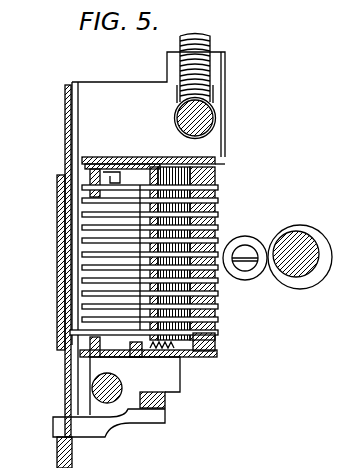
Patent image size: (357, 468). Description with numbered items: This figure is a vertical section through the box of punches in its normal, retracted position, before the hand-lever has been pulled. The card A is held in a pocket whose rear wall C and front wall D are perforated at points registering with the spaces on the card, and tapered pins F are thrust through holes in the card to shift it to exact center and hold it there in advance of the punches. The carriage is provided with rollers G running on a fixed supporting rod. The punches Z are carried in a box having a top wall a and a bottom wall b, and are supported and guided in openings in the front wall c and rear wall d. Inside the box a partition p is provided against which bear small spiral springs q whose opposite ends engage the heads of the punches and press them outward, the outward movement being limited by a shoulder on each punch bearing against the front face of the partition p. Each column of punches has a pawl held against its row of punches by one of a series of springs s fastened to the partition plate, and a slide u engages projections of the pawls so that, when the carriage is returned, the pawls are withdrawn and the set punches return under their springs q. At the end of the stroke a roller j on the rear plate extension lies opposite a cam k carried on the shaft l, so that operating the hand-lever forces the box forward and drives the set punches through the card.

The card A is at (65, 98).
The rear wall of the pocket C is at (72, 120).
The front wall of the pocket D is at (58, 175).
The rollers G is at (182, 62).
The partition p is at (226, 158).
The spiral spring q is at (216, 166).
The slide u is at (85, 165).
The top wall a is at (118, 172).
The punches Z is at (154, 170).
The front wall c is at (70, 345).
The rear wall d is at (216, 345).
The springs s is at (157, 352).
The tapered pins F is at (67, 363).
The bottom wall b is at (145, 360).
The roller j is at (247, 235).
The shaft l is at (282, 238).
The cam k is at (332, 223).